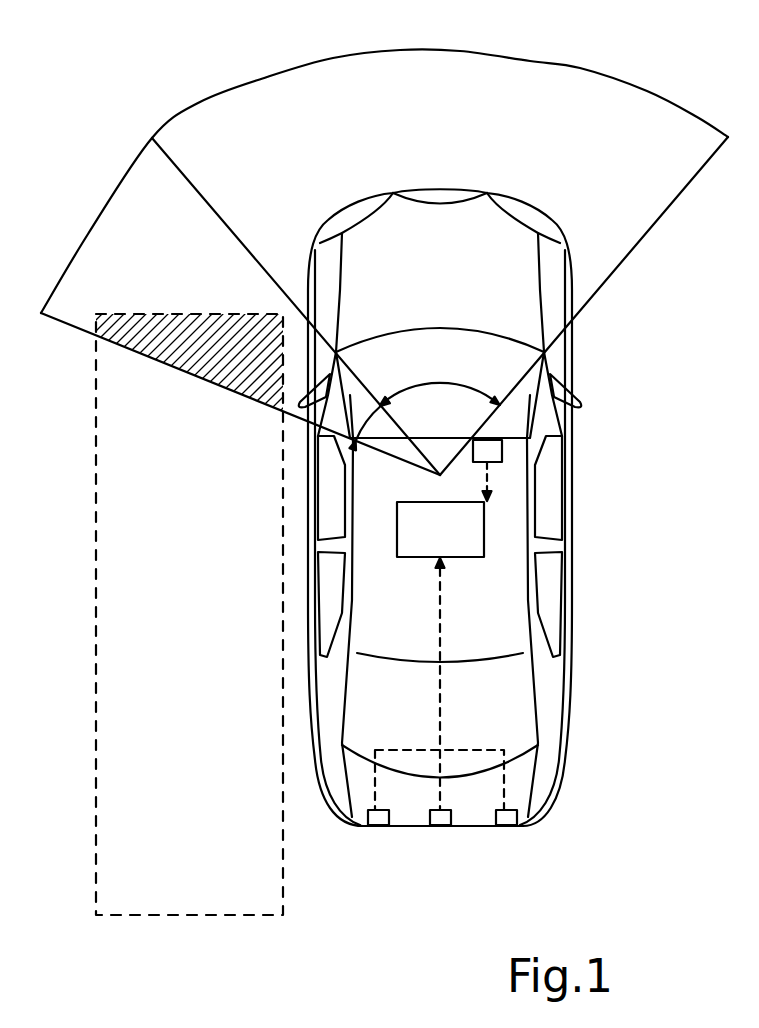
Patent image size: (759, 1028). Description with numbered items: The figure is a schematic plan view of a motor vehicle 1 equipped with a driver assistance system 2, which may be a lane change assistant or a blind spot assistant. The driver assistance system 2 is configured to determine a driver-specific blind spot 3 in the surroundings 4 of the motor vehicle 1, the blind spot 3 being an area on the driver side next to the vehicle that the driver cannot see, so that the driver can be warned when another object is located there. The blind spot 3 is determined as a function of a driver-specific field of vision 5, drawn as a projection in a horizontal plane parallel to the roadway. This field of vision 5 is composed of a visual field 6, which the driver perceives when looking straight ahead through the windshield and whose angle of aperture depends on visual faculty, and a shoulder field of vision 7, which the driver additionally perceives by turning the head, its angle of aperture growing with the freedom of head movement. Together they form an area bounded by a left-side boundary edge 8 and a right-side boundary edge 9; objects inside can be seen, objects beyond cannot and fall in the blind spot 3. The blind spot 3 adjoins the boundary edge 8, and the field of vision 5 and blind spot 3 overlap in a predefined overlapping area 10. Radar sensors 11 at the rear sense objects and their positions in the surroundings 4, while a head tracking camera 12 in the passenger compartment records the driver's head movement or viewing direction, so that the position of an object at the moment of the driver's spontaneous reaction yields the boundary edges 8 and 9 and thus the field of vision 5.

The motor vehicle 1 is at (568, 752).
The driver assistance system 2 is at (472, 540).
The driver-specific blind spot 3 is at (92, 605).
The surroundings 4 is at (641, 401).
The driver-specific field of vision 5 is at (128, 110).
The visual field 6 is at (320, 76).
The shoulder field of vision 7 is at (88, 234).
The left-side boundary edge 8 is at (197, 388).
The right-side boundary edge 9 is at (608, 292).
The overlapping area 10 is at (119, 328).
The radar sensors 11 is at (378, 825).
The camera 12 is at (502, 448).